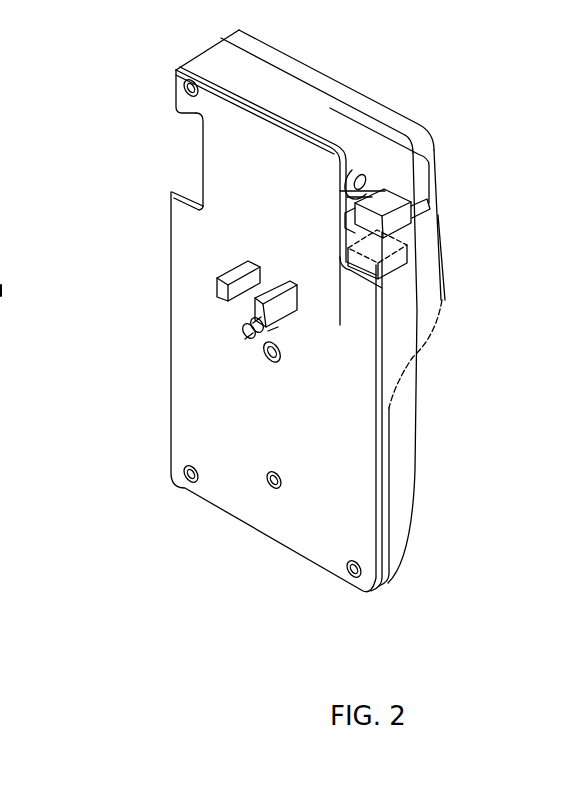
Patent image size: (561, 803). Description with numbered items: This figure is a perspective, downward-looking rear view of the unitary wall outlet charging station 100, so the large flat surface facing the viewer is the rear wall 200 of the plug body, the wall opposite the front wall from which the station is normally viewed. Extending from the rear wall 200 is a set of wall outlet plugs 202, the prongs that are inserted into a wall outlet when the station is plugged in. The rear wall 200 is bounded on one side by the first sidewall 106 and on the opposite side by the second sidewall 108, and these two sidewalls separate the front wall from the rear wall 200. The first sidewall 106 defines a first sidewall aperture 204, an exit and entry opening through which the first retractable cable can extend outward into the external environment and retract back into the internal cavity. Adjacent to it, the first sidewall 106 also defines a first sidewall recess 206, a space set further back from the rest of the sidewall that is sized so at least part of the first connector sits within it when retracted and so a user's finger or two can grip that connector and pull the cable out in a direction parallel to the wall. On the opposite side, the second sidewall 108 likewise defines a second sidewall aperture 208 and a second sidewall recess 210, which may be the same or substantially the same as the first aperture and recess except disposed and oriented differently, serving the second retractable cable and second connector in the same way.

The unitary wall outlet charging station 100 is at (372, 687).
The first sidewall 106 is at (163, 216).
The second sidewall 108 is at (405, 324).
The rear wall 200 is at (190, 385).
The set of wall outlet plugs 202 is at (204, 290).
The first sidewall aperture 204 is at (196, 152).
The first sidewall recess 206 is at (190, 181).
The second sidewall aperture 208 is at (346, 192).
The second sidewall recess 210 is at (380, 261).